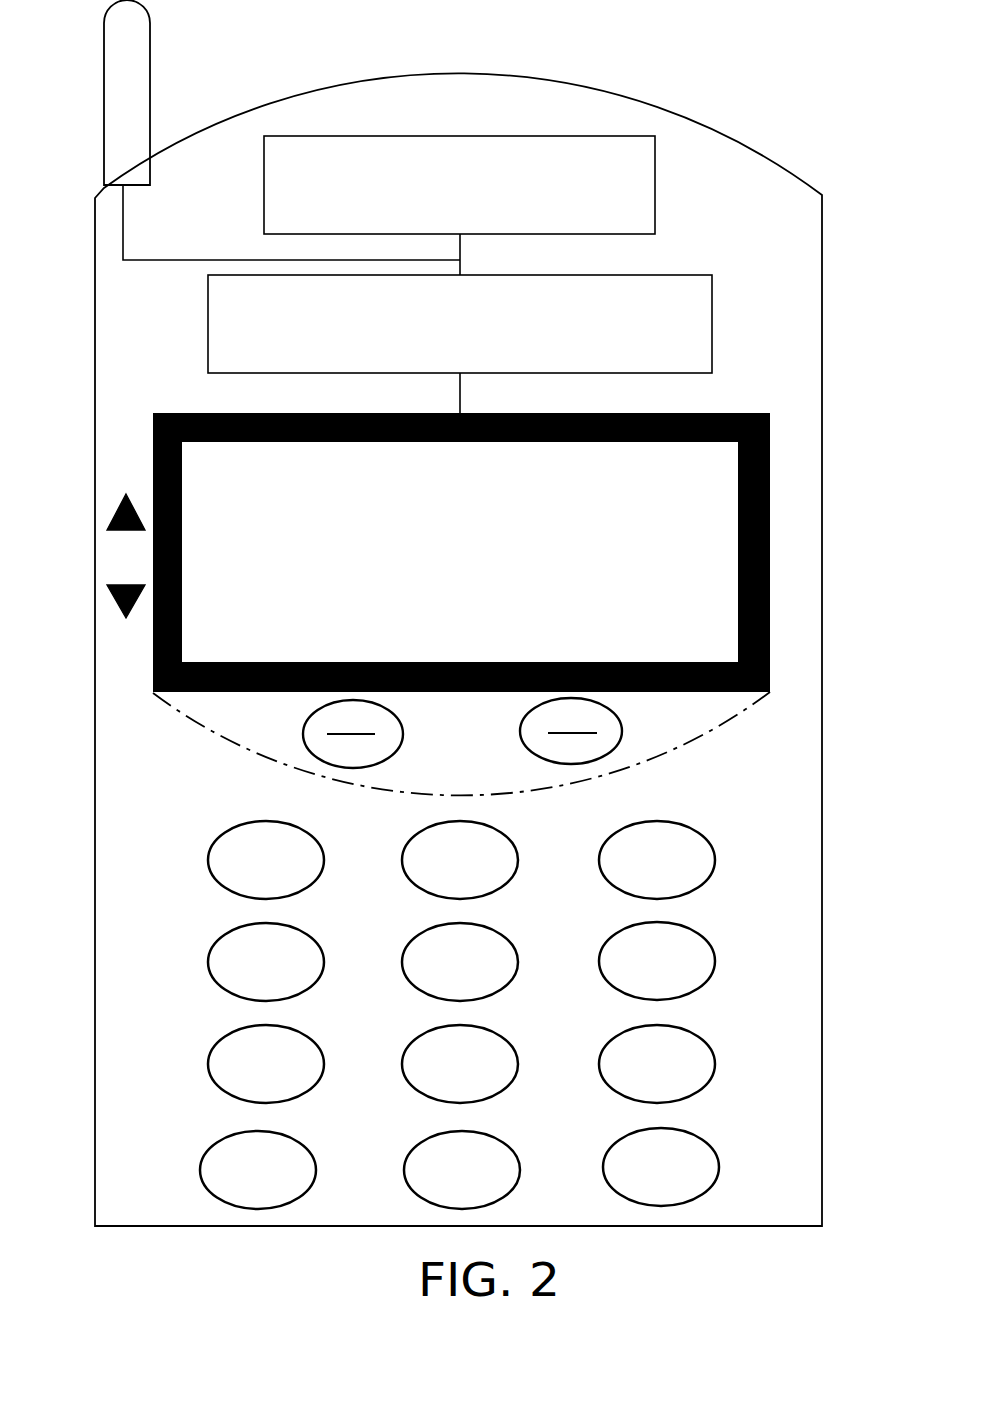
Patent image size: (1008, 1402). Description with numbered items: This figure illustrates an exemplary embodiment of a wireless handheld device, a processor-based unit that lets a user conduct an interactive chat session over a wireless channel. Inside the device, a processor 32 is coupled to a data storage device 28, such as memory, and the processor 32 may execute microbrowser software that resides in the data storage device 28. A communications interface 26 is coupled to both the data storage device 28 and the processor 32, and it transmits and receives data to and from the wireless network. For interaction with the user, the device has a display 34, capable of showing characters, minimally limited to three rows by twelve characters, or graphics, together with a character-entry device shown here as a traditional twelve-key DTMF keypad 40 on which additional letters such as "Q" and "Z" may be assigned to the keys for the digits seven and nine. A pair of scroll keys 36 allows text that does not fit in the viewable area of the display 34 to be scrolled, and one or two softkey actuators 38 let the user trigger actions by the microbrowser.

The communications interface 26 is at (128, 80).
The data storage device 28 is at (588, 135).
The processor 32 is at (672, 274).
The display 34 is at (701, 470).
The scroll keys 36 is at (125, 585).
The softkey actuators 38 is at (303, 734).
The DTMF keypad 40 is at (707, 940).